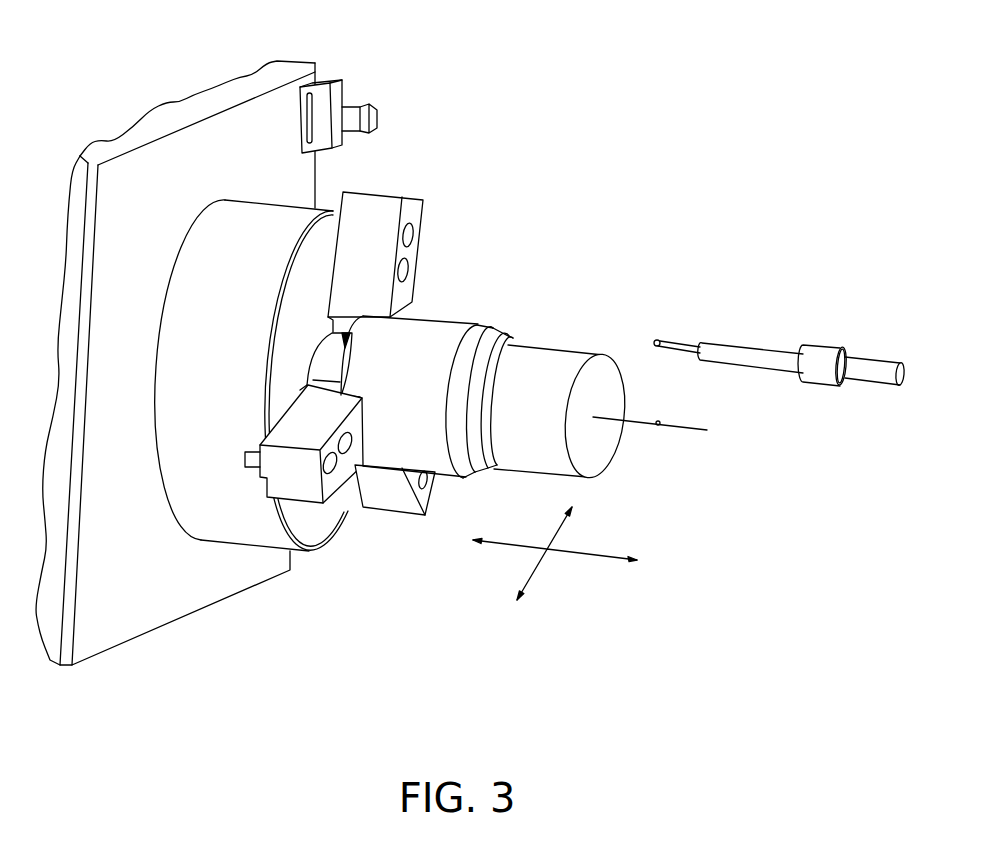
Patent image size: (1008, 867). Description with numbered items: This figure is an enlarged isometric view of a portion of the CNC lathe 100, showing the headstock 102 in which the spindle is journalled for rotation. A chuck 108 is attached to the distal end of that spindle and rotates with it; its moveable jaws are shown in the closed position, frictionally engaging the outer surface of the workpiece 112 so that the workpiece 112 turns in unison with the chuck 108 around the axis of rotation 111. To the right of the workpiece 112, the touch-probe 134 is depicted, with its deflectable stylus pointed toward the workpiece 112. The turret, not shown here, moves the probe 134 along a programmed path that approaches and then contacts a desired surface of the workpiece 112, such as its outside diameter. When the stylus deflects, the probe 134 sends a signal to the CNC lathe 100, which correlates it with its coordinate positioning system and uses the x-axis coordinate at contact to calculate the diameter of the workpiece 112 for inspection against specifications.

The CNC lathe 100 is at (470, 345).
The headstock 102 is at (197, 113).
The chuck 108 is at (280, 203).
The axis of rotation 111 is at (658, 423).
The workpiece 112 is at (542, 348).
The touch-probe 134 is at (761, 401).